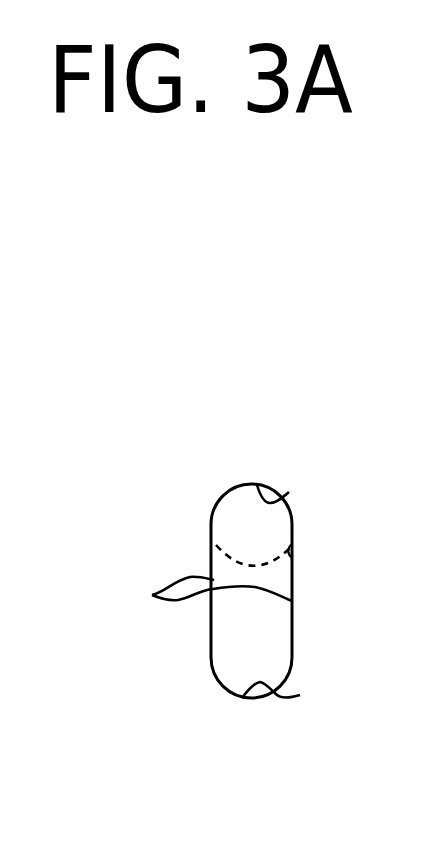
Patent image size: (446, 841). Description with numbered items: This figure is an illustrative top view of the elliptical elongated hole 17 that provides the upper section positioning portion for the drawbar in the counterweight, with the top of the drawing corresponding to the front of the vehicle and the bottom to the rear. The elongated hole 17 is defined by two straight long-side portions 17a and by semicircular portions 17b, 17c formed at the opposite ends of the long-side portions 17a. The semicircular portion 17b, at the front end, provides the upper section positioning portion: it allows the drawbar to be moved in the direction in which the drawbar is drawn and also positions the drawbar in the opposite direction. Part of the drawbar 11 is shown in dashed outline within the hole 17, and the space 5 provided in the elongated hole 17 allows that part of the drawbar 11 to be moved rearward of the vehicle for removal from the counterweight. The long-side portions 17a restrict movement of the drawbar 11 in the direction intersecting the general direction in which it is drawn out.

The elongated hole 17 is at (298, 615).
The long-side portions 17a is at (152, 595).
The semicircular portion 17b is at (290, 492).
The semicircular portion 17c is at (300, 695).
The drawbar 11 is at (296, 562).
The space 5 is at (242, 643).